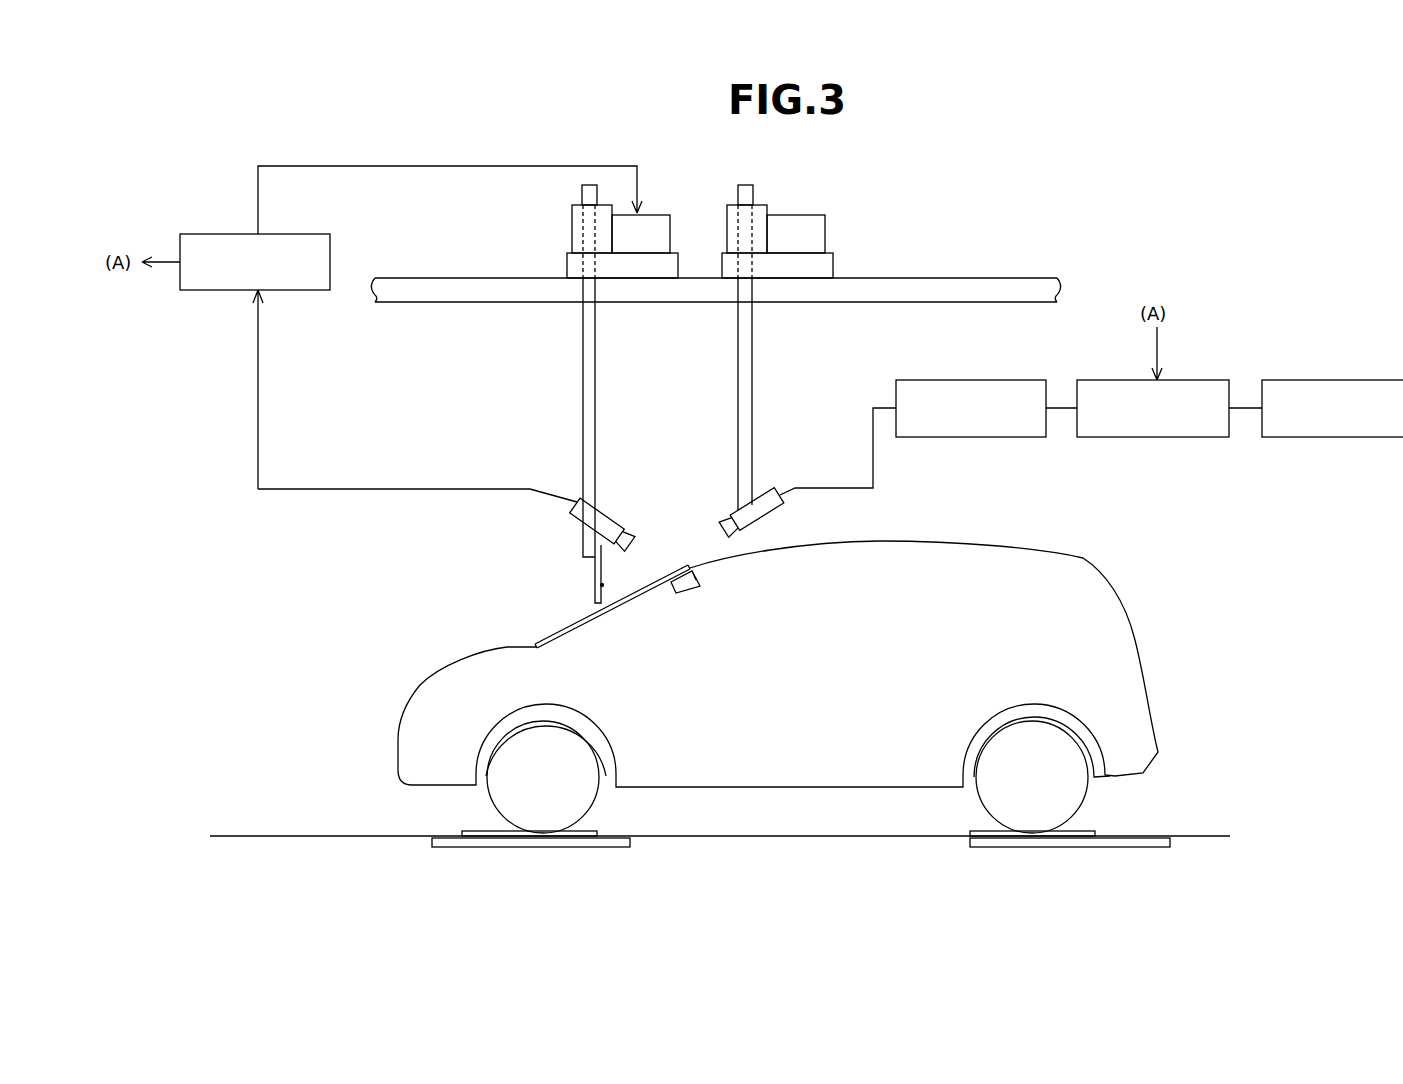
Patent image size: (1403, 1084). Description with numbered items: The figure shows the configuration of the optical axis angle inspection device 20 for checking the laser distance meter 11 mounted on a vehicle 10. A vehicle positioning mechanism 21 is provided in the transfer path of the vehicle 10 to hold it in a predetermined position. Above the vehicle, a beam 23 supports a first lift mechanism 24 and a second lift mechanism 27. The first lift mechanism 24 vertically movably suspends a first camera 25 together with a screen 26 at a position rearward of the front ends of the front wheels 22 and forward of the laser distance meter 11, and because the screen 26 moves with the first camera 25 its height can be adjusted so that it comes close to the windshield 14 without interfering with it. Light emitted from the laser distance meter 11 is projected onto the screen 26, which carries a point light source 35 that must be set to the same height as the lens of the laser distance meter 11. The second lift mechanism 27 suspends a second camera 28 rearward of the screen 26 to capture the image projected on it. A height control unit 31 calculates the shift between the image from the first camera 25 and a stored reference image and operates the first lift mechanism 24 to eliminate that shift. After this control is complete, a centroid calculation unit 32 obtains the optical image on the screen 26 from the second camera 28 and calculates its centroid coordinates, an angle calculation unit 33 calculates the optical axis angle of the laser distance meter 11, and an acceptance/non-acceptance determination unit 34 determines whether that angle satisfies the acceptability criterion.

The vehicle 10 is at (470, 653).
The laser distance meter 11 is at (690, 576).
The windshield 14 is at (560, 633).
The optical axis angle inspection device 20 is at (1143, 186).
The vehicle positioning mechanism 21 is at (545, 848).
The front wheels 22 is at (503, 802).
The beam 23 is at (950, 290).
The first lift mechanism 24 is at (572, 240).
The first camera 25 is at (602, 520).
The screen 26 is at (601, 573).
The second lift mechanism 27 is at (728, 235).
The second camera 28 is at (735, 510).
The height control unit 31 is at (222, 233).
The centroid calculation unit 32 is at (972, 438).
The angle calculation unit 33 is at (1157, 438).
The acceptance/non-acceptance determination unit 34 is at (1344, 438).
The point light source 35 is at (603, 587).